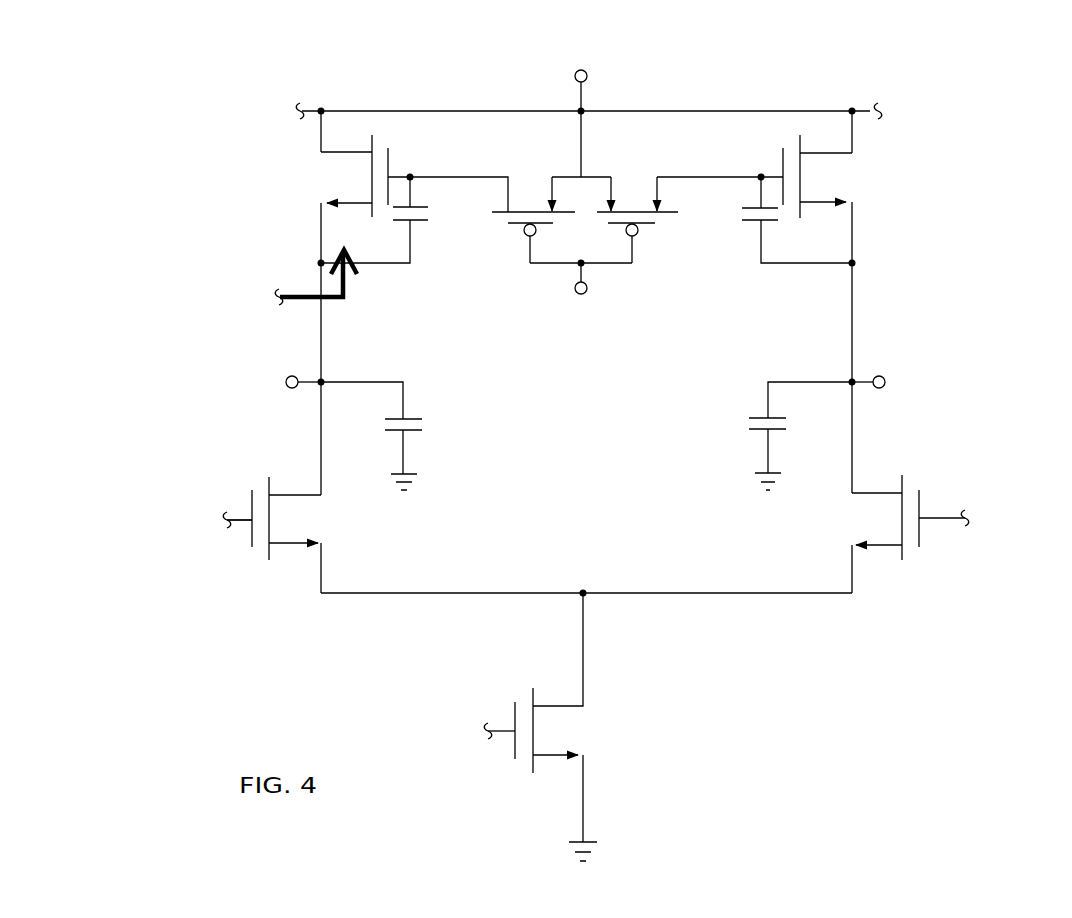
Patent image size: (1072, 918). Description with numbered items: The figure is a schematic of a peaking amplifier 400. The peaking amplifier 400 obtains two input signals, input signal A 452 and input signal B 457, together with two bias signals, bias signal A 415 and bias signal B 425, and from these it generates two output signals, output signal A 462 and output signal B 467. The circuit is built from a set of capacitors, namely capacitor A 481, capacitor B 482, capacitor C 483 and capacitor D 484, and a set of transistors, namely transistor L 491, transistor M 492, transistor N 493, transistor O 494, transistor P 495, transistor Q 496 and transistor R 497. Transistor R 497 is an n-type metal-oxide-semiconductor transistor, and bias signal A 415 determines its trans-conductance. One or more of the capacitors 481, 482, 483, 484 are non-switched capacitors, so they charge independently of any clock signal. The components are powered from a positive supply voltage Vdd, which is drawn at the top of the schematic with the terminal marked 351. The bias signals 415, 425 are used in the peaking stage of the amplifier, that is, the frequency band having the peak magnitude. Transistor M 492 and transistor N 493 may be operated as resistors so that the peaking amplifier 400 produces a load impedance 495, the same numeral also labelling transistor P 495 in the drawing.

The peaking amplifier 400 is at (233, 110).
The Vdd supply terminal 351 is at (591, 73).
The transistor L 491 is at (356, 177).
The transistor M 492 is at (533, 208).
The transistor N 493 is at (623, 207).
The transistor O 494 is at (806, 182).
The capacitor A 481 is at (428, 222).
The capacitor B 482 is at (741, 216).
The bias signal B 425 is at (588, 297).
The transistor P 495 is at (367, 542).
The output signal A 462 is at (284, 383).
The capacitor C 483 is at (416, 412).
The capacitor D 484 is at (750, 433).
The output signal B 467 is at (890, 382).
The input signal B 457 is at (954, 511).
The input signal A 452 is at (237, 522).
The transistor Q 496 is at (892, 520).
The transistor R 497 is at (541, 732).
The bias signal A 415 is at (497, 721).